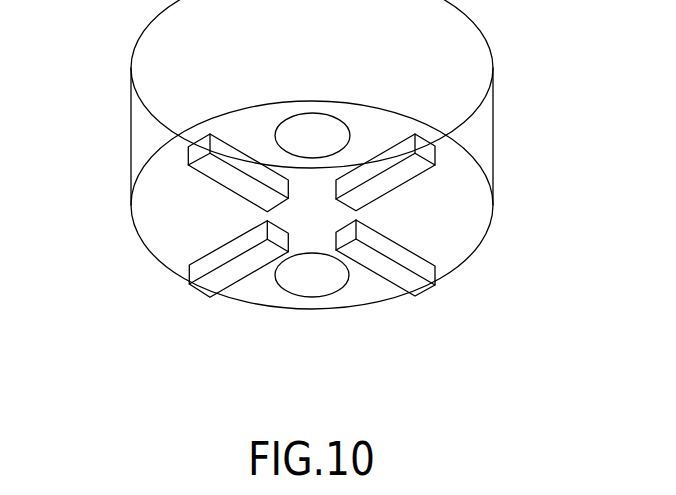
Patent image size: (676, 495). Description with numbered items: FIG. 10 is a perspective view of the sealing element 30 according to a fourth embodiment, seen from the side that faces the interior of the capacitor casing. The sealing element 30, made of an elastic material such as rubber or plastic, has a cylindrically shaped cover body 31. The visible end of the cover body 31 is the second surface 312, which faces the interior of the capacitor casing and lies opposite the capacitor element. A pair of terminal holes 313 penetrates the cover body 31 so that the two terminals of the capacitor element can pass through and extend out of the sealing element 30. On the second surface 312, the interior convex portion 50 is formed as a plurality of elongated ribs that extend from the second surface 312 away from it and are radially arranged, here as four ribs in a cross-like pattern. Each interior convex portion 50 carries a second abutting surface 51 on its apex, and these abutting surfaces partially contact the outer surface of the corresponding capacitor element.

The sealing element 30 is at (298, 192).
The cover body 31 is at (158, 73).
The second surface 312 is at (458, 235).
The terminal holes 313 is at (320, 137).
The interior convex portion 50 is at (271, 248).
The second abutting surface 51 is at (242, 263).